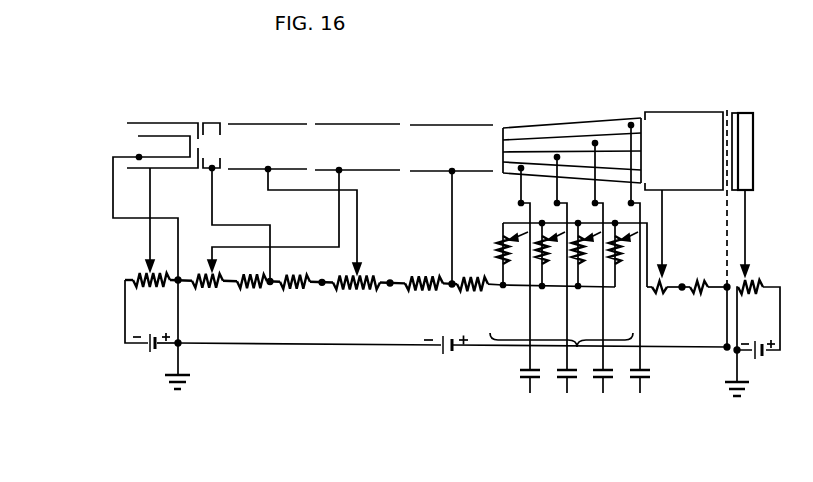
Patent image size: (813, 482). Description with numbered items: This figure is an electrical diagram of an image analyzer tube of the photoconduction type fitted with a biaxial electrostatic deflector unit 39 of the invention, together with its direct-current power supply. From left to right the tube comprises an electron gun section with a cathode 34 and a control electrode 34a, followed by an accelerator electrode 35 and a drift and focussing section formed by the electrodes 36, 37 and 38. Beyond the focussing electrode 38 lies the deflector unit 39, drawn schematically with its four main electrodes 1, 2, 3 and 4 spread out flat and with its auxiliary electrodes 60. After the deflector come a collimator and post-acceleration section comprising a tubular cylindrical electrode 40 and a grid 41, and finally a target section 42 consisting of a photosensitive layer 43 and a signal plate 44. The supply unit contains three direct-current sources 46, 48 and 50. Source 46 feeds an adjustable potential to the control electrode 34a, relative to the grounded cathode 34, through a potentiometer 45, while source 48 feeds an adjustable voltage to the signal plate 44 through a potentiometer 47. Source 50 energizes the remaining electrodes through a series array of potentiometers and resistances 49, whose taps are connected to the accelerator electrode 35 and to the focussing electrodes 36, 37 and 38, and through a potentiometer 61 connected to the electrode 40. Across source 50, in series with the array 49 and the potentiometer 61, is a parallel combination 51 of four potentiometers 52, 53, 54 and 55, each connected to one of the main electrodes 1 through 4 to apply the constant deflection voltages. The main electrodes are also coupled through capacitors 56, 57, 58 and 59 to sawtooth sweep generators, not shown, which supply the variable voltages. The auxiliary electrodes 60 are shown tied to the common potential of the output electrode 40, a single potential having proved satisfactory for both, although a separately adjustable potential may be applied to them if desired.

The main electrode 1 is at (512, 170).
The main electrode 2 is at (503, 153).
The main electrode 3 is at (507, 140).
The main electrode 4 is at (528, 130).
The cathode 34 is at (168, 135).
The control electrode 34a is at (188, 123).
The accelerator electrode 35 is at (213, 122).
The focussing electrode 36 is at (275, 123).
The focussing electrode 37 is at (375, 125).
The focussing electrode 38 is at (460, 125).
The biaxial electrostatic deflector unit 39 is at (560, 142).
The tubular cylindrical electrode 40 is at (685, 110).
The grid 41 is at (727, 110).
The target section 42 is at (746, 145).
The photosensitive layer 43 is at (735, 112).
The signal plate 44 is at (750, 112).
The potentiometer 45 is at (140, 274).
The D-C source 46 is at (152, 352).
The potentiometer 47 is at (763, 286).
The D-C source 48 is at (747, 362).
The series array of potentiometers and resistances 49 is at (375, 271).
The D-C source 50 is at (451, 352).
The parallel combination of four potentiometers 51 is at (520, 336).
The potentiometer 52 is at (520, 260).
The potentiometer 53 is at (557, 260).
The potentiometer 54 is at (594, 260).
The potentiometer 55 is at (630, 260).
The capacitor 56 is at (538, 373).
The capacitor 57 is at (575, 373).
The capacitor 58 is at (612, 373).
The capacitor 59 is at (651, 374).
The auxiliary electrodes 60 is at (641, 122).
The potentiometer 61 is at (665, 293).